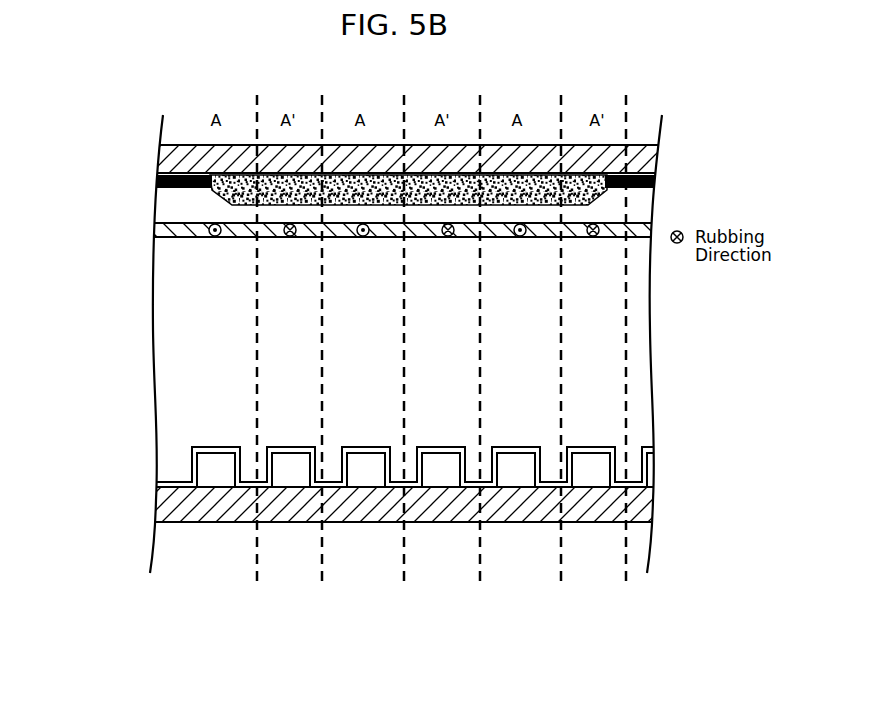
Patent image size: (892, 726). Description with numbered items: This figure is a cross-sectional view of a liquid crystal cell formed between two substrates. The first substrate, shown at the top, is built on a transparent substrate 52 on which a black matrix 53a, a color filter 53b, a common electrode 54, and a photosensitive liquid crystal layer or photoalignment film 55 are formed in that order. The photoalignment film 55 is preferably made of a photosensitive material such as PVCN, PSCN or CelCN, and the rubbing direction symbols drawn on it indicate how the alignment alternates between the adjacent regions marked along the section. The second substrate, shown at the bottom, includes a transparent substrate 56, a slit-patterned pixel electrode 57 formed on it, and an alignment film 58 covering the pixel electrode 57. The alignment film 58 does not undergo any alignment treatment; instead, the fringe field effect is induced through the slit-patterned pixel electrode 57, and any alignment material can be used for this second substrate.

The transparent substrate 52 is at (172, 162).
The black matrix 53a is at (158, 182).
The color filter 53b is at (168, 209).
The common electrode 54 is at (165, 210).
The photoalignment film 55 is at (157, 228).
The transparent substrate 56 is at (163, 511).
The slit-patterned pixel electrode 57 is at (215, 468).
The alignment film 58 is at (193, 447).